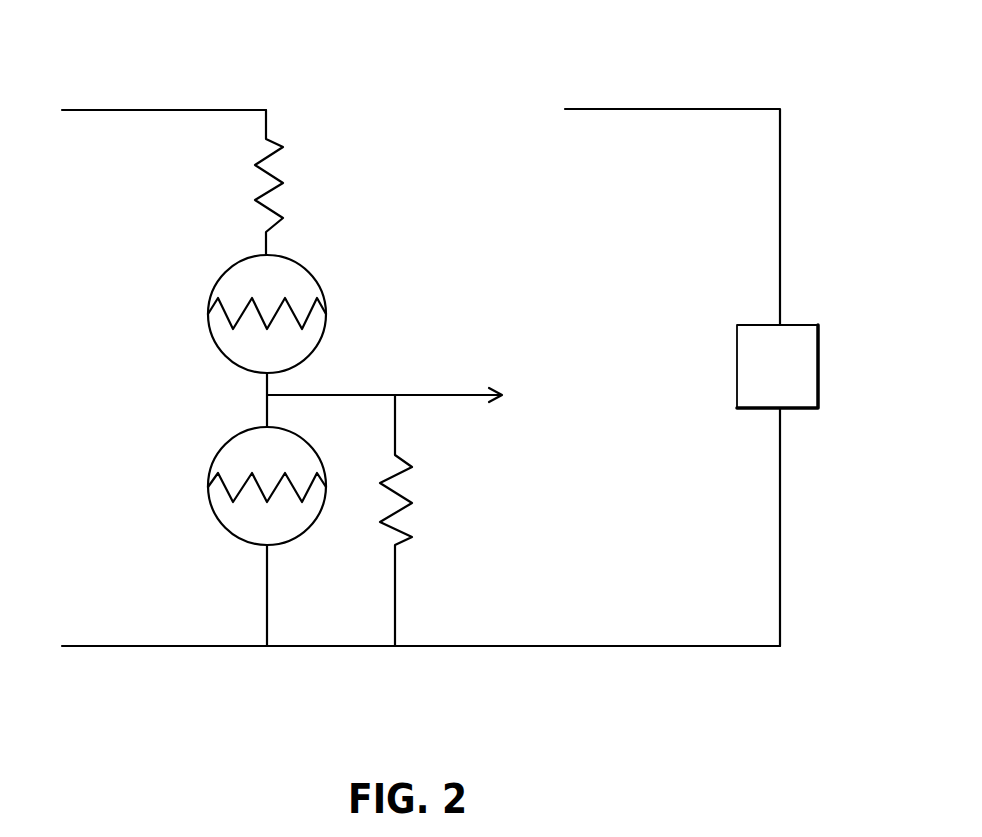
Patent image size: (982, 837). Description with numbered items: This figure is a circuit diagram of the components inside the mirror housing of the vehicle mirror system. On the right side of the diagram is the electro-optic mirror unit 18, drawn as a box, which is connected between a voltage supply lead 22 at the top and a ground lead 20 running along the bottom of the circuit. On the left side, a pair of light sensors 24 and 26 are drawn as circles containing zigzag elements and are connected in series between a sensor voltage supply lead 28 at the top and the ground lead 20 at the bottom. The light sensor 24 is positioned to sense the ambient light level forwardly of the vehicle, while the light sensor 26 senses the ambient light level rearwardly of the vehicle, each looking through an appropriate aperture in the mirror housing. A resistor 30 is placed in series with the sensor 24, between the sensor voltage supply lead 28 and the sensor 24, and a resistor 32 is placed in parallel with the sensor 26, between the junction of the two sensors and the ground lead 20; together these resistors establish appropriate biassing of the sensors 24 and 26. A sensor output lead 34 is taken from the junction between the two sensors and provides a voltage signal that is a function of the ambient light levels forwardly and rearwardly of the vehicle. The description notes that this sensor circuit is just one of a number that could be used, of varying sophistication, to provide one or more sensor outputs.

The electro-optic mirror unit 18 is at (785, 367).
The ground lead 20 is at (138, 645).
The voltage supply lead 22 is at (672, 108).
The light sensor 24 is at (226, 266).
The light sensor 26 is at (232, 438).
The sensor voltage supply lead 28 is at (148, 109).
The resistor 30 is at (296, 182).
The resistor 32 is at (421, 520).
The sensor output lead 34 is at (463, 393).